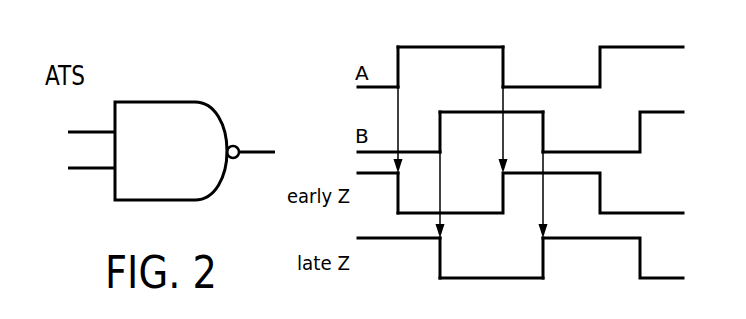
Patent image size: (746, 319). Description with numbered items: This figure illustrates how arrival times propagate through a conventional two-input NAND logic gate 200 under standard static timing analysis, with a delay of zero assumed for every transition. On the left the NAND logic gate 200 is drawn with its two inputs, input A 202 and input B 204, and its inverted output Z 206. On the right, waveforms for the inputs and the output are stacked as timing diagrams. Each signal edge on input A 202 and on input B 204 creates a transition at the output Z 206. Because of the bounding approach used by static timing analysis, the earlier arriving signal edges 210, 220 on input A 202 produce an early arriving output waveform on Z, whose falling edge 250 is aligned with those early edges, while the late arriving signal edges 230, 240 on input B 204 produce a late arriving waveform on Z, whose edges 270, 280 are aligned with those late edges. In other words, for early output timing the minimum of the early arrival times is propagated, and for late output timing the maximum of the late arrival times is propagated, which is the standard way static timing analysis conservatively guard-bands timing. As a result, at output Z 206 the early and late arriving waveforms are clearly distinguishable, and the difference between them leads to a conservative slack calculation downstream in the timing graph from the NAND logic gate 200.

The NAND logic gate 200 is at (153, 101).
The input A 202 is at (68, 132).
The input B 204 is at (68, 168).
The output Z 206 is at (237, 145).
The earlier arriving signal edge 210 is at (398, 60).
The earlier arriving signal edge 220 is at (503, 63).
The late arriving signal edge 230 is at (440, 133).
The late arriving signal edge 240 is at (543, 141).
The early arriving output waveform 250 is at (398, 209).
The late arriving waveform 270 is at (440, 258).
The late arriving waveform 280 is at (543, 258).